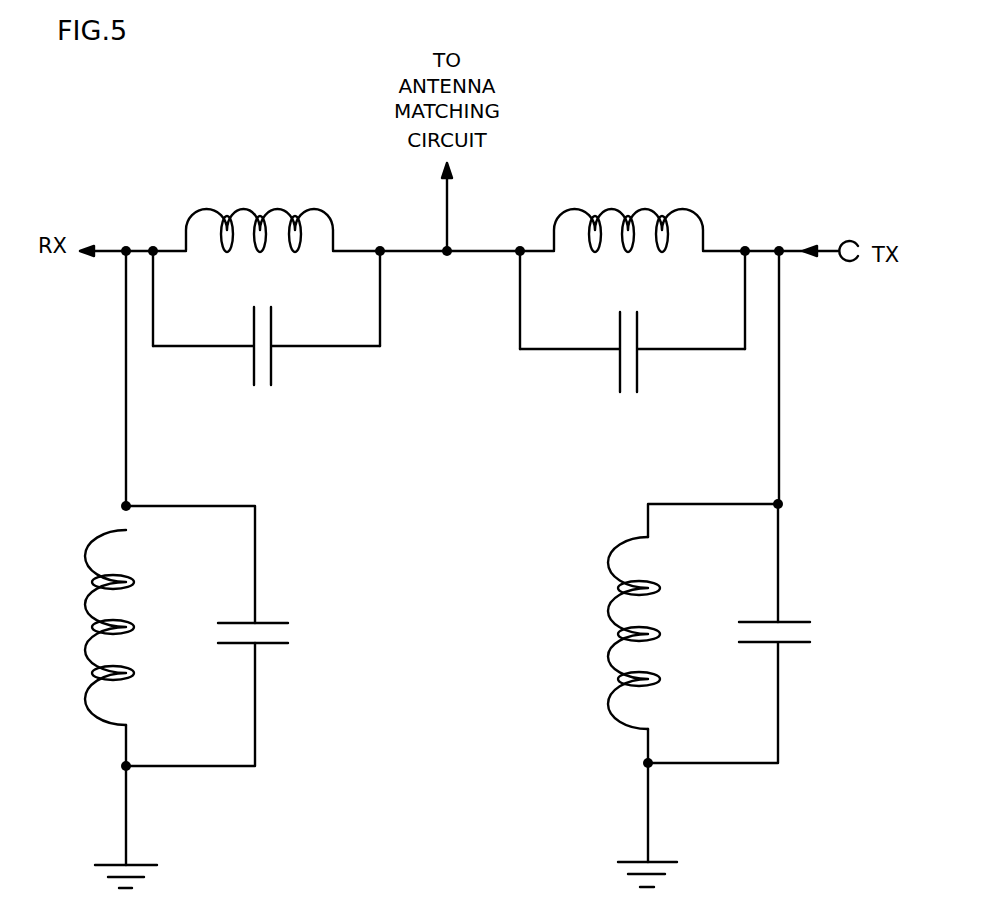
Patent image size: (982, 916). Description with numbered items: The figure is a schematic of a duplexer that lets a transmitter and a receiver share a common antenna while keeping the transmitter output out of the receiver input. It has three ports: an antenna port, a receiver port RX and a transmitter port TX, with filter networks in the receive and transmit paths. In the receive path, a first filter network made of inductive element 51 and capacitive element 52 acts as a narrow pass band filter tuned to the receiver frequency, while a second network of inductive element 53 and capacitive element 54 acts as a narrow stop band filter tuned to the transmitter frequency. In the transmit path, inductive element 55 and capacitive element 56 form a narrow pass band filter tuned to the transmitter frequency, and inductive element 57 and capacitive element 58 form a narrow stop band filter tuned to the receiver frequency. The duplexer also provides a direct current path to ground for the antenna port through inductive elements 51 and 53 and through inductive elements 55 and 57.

The inductive element 51 is at (134, 582).
The capacitive element 52 is at (280, 623).
The inductive element 53 is at (210, 208).
The capacitive element 54 is at (273, 322).
The inductive element 55 is at (662, 588).
The capacitive element 56 is at (808, 622).
The inductive element 57 is at (652, 213).
The capacitive element 58 is at (640, 323).